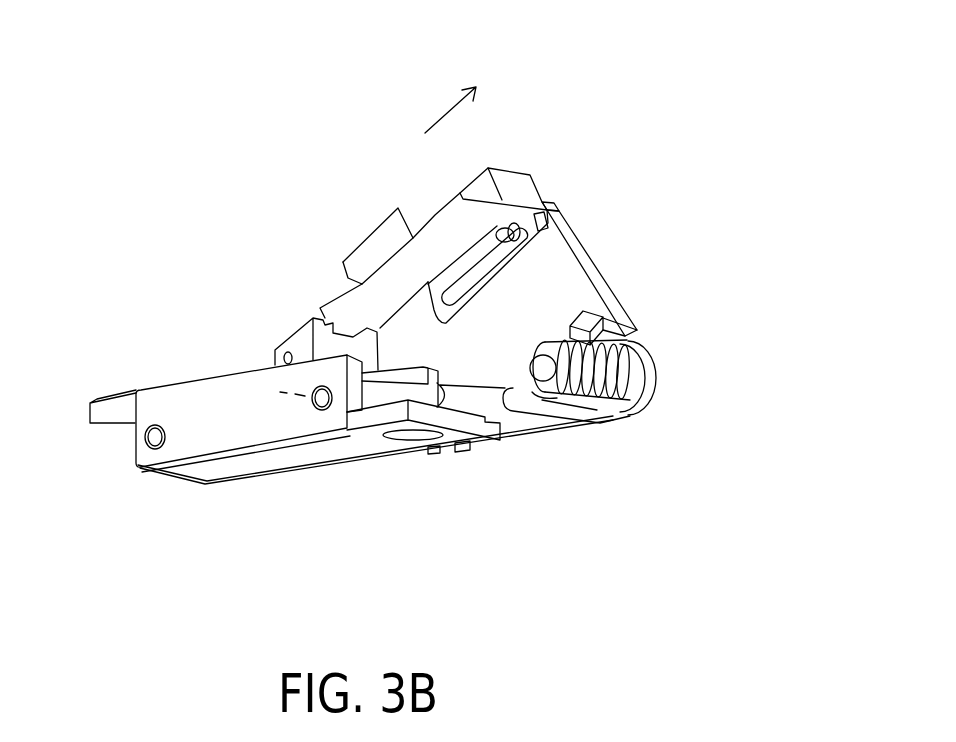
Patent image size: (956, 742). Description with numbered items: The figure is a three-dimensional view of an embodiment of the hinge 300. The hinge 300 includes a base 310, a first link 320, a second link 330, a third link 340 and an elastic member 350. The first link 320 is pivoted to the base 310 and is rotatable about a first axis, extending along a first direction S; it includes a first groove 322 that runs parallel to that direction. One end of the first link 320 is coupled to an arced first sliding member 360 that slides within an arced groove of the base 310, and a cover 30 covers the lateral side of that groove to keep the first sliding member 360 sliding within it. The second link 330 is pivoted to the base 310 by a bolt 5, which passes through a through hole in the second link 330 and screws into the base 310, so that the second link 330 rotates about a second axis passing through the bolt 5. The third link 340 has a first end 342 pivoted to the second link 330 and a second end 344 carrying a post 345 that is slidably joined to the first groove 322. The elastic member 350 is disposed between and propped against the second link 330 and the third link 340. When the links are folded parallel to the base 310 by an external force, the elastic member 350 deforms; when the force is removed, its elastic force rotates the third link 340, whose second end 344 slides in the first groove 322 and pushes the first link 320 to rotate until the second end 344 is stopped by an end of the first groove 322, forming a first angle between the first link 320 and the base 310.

The hinge 300 is at (395, 290).
The base 310 is at (102, 402).
The cover 30 is at (215, 440).
The bolt 5 is at (330, 440).
The first sliding member 360 is at (297, 343).
The first link 320 is at (378, 243).
The first groove 322 is at (447, 280).
The post 345 is at (565, 222).
The second end 344 is at (548, 192).
The third link 340 is at (595, 270).
The first end 342 is at (637, 393).
The elastic member 350 is at (575, 400).
The second link 330 is at (520, 423).